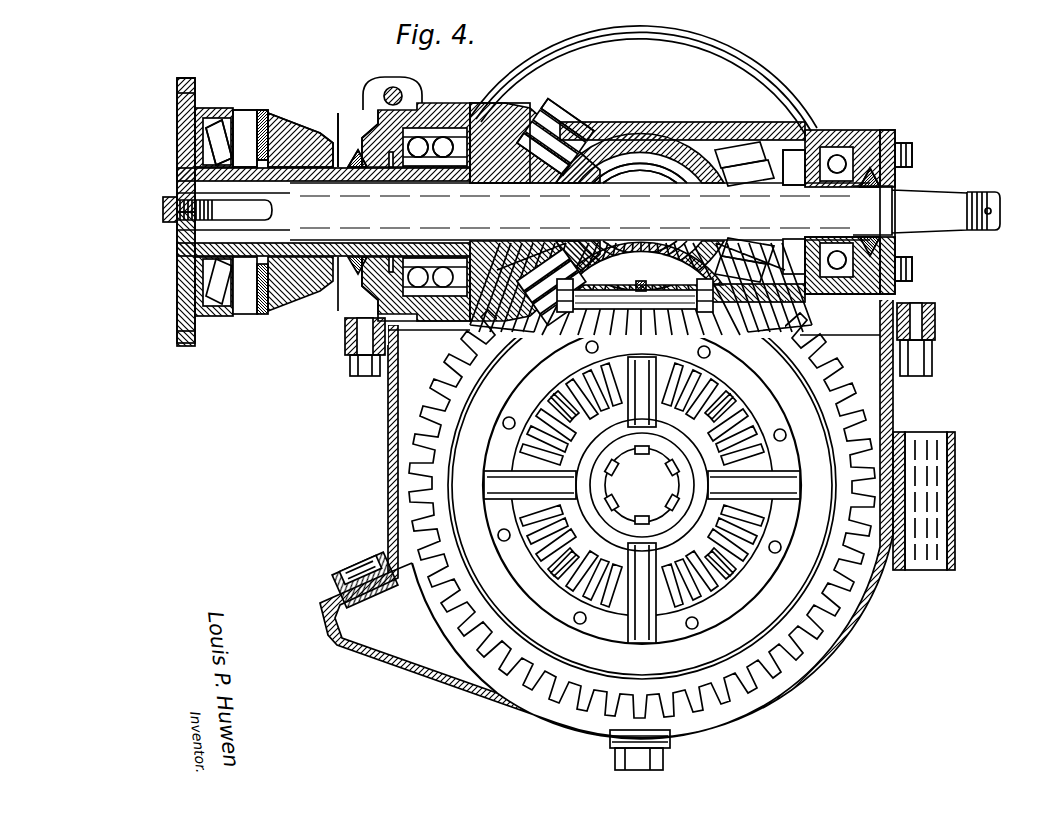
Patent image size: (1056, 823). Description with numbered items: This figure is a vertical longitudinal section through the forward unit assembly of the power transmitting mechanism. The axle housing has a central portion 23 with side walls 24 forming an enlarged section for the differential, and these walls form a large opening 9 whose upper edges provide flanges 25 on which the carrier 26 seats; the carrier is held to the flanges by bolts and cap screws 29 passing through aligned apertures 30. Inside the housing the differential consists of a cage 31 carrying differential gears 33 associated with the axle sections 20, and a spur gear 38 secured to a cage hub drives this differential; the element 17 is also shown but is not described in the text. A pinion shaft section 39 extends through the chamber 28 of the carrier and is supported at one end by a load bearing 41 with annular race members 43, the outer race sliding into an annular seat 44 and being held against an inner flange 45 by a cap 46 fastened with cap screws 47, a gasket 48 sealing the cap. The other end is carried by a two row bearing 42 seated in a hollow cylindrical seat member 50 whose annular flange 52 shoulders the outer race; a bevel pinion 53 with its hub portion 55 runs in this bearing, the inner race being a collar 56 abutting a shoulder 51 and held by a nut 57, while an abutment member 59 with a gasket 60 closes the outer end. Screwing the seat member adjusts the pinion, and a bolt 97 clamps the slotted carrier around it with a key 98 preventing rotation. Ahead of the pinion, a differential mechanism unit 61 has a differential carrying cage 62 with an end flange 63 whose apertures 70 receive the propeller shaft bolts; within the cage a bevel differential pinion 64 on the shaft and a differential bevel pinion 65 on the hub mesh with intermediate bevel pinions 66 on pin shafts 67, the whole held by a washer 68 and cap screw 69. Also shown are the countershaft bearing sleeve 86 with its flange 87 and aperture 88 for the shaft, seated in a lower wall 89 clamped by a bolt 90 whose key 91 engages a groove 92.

The opening 9 is at (855, 340).
The axle tube spigot 17 is at (955, 530).
The axle section 20 is at (642, 485).
The central portion 23 is at (770, 700).
The side wall 24 is at (388, 450).
The flange 25 is at (345, 348).
The carrier 26 is at (748, 72).
The chamber 28 is at (794, 167).
The bolts and cap screws 29 is at (355, 376).
The aperture 30 is at (345, 330).
The cage 31 is at (738, 592).
The differential gear 33 is at (690, 600).
The spur gear 38 is at (462, 631).
The pinion shaft section 39 is at (645, 211).
The load bearing 41 is at (845, 285).
The two row bearing 42 is at (443, 136).
The annular race member 43 is at (818, 130).
The annular seat 44 is at (830, 296).
The inner flange 45 is at (805, 285).
The cap 46 is at (895, 247).
The cap screw 47 is at (912, 150).
The gasket 48 is at (880, 178).
The seat member 50 is at (435, 322).
The shoulder 51 is at (478, 175).
The annular flange 52 is at (530, 112).
The bevel pinion 53 is at (545, 150).
The hub portion 55 is at (338, 113).
The collar 56 is at (500, 292).
The nut 57 is at (375, 290).
The abutment member 59 is at (355, 150).
The gasket 60 is at (370, 280).
The differential mechanism unit 61 is at (224, 318).
The differential carrying cage 62 is at (222, 122).
The end flange 63 is at (190, 78).
The bevel differential pinion 64 is at (195, 160).
The differential bevel pinion 65 is at (305, 128).
The bevel pinion 66 is at (262, 112).
The pin shaft 67 is at (245, 120).
The washer 68 is at (180, 238).
The cap screw 69 is at (163, 212).
The aperture 70 is at (180, 92).
The bearing sleeve 86 is at (641, 289).
The flange 87 is at (641, 263).
The aperture 88 is at (640, 169).
The lower wall 89 is at (705, 352).
The bolt 90 is at (560, 352).
The key 91 is at (639, 281).
The groove 92 is at (650, 288).
The bolt 97 is at (390, 87).
The key 98 is at (410, 95).